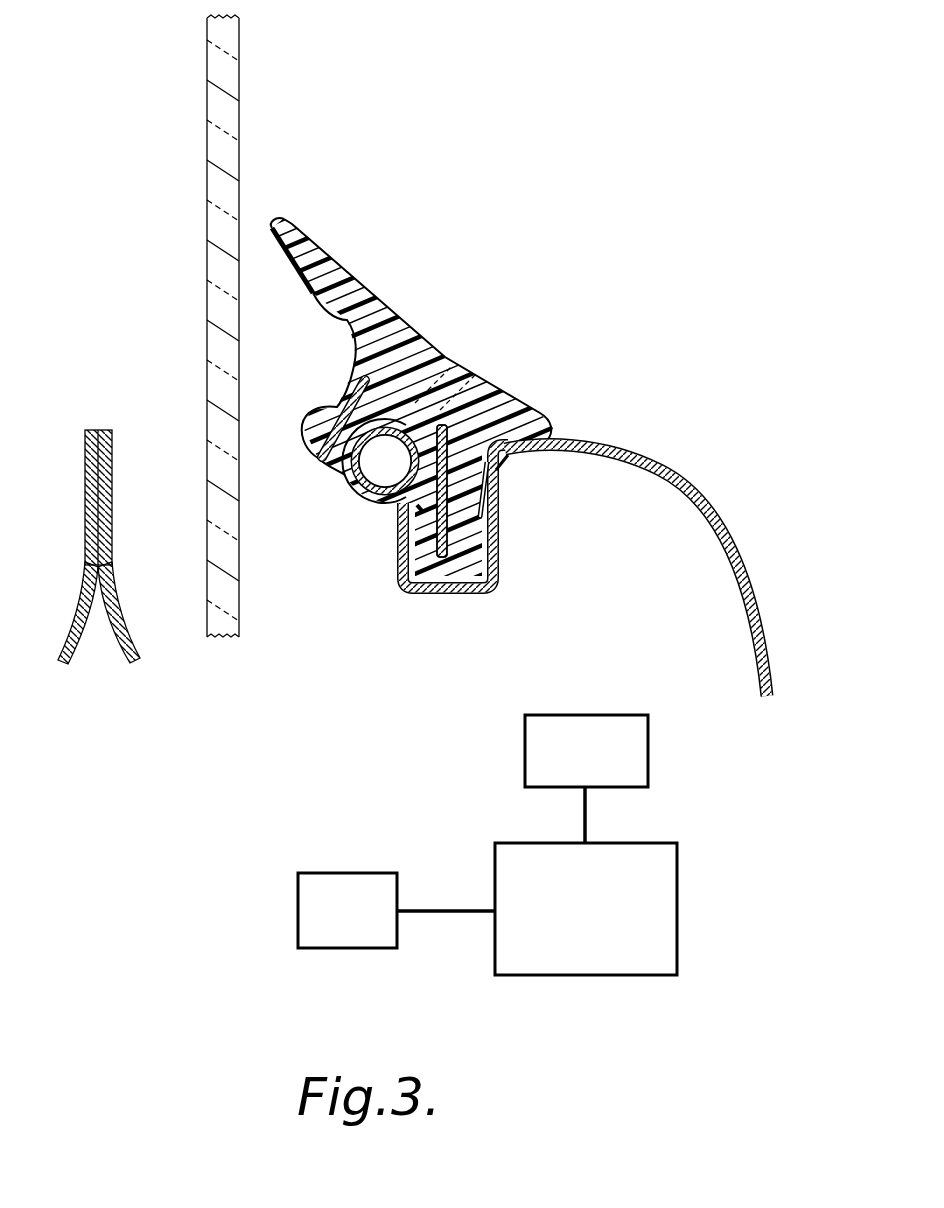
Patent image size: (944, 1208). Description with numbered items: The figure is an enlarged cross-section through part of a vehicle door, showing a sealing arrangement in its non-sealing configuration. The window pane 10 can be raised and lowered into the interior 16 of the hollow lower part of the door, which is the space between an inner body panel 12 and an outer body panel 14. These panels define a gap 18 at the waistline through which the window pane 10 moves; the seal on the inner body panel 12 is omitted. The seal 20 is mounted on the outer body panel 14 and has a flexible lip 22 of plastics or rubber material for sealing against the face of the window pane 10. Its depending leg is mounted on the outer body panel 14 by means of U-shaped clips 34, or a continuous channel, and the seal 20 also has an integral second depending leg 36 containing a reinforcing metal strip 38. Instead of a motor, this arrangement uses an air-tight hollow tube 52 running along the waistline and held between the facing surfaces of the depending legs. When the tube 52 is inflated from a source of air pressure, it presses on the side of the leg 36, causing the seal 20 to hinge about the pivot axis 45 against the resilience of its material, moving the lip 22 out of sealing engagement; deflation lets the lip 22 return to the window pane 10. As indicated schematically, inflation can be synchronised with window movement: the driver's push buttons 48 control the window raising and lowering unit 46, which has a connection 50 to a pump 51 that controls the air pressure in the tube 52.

The window pane 10 is at (236, 123).
The inner body panel 12 is at (88, 500).
The outer body panel 14 is at (680, 477).
The interior 16 is at (242, 753).
The gap 18 is at (167, 497).
The seal 20 is at (466, 282).
The lip 22 is at (297, 230).
The U-shaped clips 34 is at (455, 595).
The second depending leg 36 is at (352, 400).
The reinforcing metal strip 38 is at (345, 440).
The pivot axis 45 is at (458, 362).
The window raising and lowering unit 46 is at (623, 842).
The driver's push buttons 48 is at (592, 715).
The connection 50 is at (449, 912).
The pump 51 is at (353, 872).
The hollow tube 52 is at (373, 508).